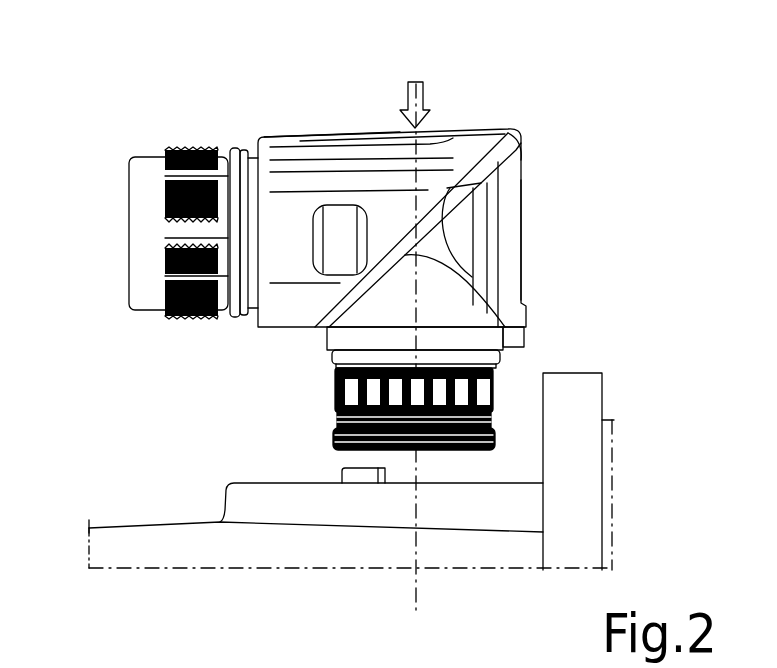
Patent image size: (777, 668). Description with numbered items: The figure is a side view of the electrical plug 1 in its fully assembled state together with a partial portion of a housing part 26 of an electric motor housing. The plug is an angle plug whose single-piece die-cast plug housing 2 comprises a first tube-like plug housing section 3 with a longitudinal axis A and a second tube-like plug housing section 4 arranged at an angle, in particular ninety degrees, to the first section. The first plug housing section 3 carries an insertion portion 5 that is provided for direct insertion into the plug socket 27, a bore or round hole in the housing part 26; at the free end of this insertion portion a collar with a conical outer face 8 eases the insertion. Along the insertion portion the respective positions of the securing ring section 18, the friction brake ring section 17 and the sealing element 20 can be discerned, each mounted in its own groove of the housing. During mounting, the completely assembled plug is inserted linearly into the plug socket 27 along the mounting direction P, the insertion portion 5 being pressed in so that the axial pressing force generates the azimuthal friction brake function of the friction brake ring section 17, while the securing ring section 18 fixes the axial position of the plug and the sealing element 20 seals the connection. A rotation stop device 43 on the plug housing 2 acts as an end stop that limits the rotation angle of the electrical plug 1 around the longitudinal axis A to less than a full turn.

The electrical plug 1 is at (248, 138).
The plug housing 2 is at (531, 153).
The first tube-like plug housing section 3 is at (528, 287).
The second tube-like plug housing section 4 is at (286, 136).
The insertion portion 5 is at (514, 367).
The conical outer face 8 is at (337, 446).
The friction brake ring section 17 is at (328, 380).
The securing ring section 18 is at (497, 427).
The sealing element 20 is at (338, 359).
The housing part 26 is at (152, 503).
The plug socket 27 is at (449, 477).
The rotation stop device 43 is at (524, 327).
The mounting direction P is at (425, 98).
The longitudinal axis A is at (415, 575).